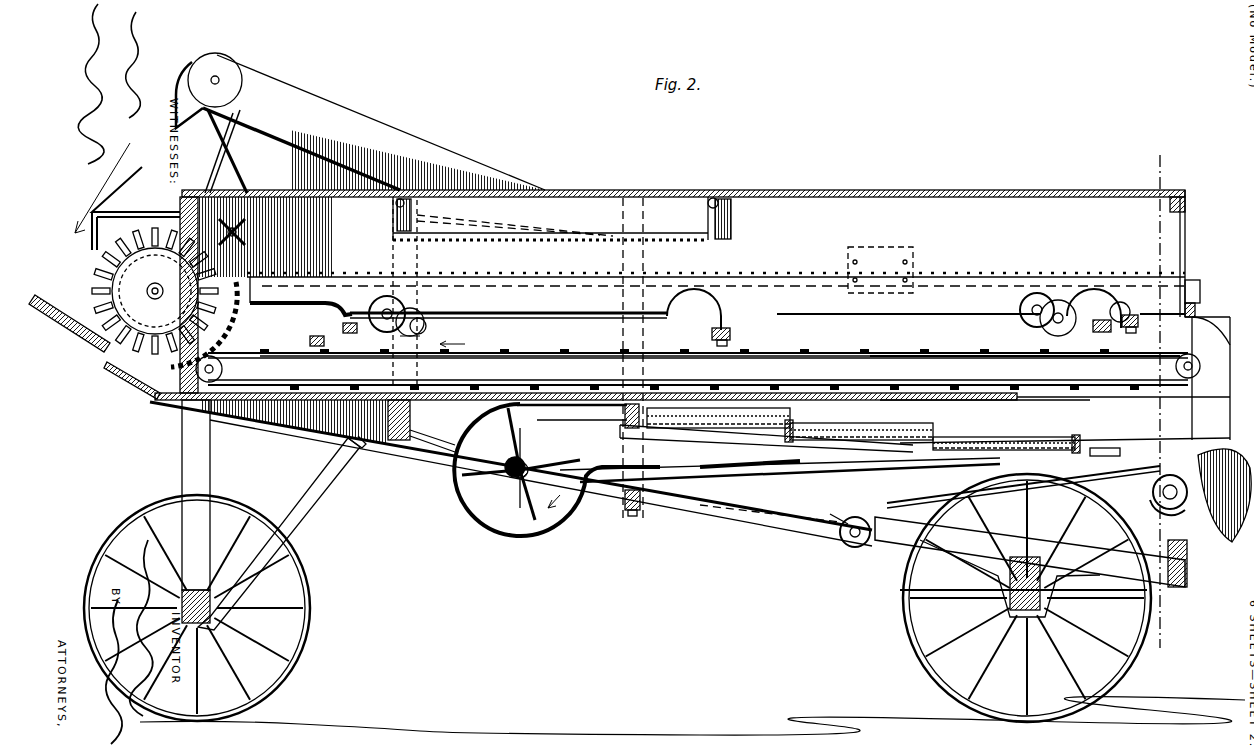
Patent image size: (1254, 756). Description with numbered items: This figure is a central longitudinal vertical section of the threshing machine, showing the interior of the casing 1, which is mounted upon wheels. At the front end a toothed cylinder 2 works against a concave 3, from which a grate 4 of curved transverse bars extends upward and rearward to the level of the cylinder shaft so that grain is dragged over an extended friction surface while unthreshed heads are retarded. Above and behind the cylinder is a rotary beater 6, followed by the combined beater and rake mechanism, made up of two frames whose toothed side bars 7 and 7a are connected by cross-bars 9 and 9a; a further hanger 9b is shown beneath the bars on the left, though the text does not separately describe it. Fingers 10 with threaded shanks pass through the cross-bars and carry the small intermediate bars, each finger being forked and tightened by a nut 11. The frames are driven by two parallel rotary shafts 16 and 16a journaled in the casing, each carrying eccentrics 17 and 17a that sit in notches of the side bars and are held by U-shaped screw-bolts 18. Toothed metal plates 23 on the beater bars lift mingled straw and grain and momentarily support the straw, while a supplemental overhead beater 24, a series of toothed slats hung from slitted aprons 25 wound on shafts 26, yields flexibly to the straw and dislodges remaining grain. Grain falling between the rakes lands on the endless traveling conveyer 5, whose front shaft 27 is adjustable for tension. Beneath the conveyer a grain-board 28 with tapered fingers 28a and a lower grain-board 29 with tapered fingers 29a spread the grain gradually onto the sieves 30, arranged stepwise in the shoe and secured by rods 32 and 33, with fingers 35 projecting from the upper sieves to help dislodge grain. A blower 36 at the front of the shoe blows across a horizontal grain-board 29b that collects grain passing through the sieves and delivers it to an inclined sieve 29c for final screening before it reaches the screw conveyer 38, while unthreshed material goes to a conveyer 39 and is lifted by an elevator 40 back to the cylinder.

The casing 1 is at (880, 205).
The toothed cylinder 2 is at (155, 291).
The concave 3 is at (597, 404).
The grate 4 is at (215, 315).
The endless traveling conveyer 5 is at (698, 369).
The rotary beater 6 is at (240, 230).
The side rake and beater bar 7 is at (1196, 260).
The side rake and beater bar 7a is at (1212, 272).
The cross-bar 9 is at (350, 334).
The cross-bar 9a is at (720, 347).
The hanger 9b is at (318, 348).
The finger 10 is at (1092, 335).
The nut 11 is at (1224, 495).
The rotary shaft 16 is at (382, 324).
The rotary shaft 16a is at (1030, 320).
The eccentric 17 is at (410, 312).
The eccentric 17a is at (763, 310).
The U-shaped screw-bolt 18 is at (432, 335).
The metal plate 23 is at (890, 260).
The supplemental overhead beater 24 is at (560, 232).
The apron 25 is at (397, 222).
The shaft 26 is at (715, 197).
The front conveyer shaft 27 is at (222, 367).
The grain-board 28 is at (1025, 367).
The finger 28a is at (607, 367).
The grain-board 29 is at (432, 426).
The finger 29a is at (985, 404).
The grain-board 29b is at (820, 455).
The inclined sieve 29c is at (990, 487).
The sieve 30 is at (725, 408).
The rod 32 is at (745, 478).
The rod 33 is at (625, 416).
The finger 35 is at (901, 423).
The blower 36 is at (557, 470).
The screw conveyer 38 is at (856, 516).
The conveyer 39 is at (1165, 478).
The elevator 40 is at (360, 123).